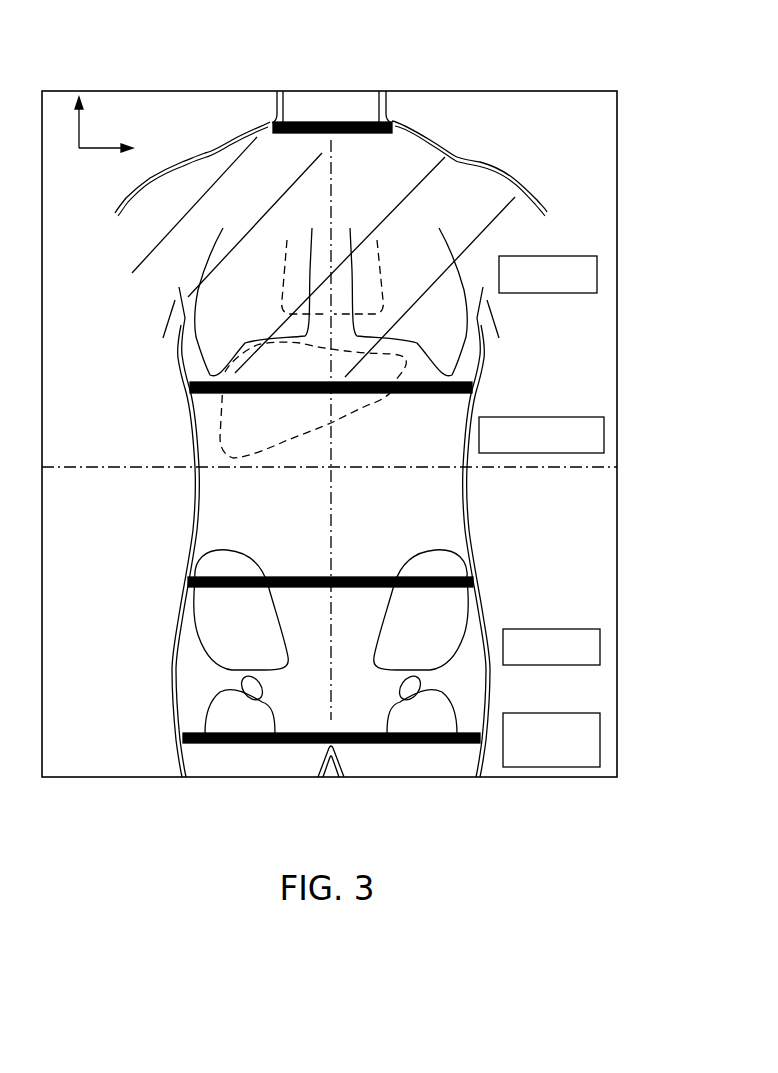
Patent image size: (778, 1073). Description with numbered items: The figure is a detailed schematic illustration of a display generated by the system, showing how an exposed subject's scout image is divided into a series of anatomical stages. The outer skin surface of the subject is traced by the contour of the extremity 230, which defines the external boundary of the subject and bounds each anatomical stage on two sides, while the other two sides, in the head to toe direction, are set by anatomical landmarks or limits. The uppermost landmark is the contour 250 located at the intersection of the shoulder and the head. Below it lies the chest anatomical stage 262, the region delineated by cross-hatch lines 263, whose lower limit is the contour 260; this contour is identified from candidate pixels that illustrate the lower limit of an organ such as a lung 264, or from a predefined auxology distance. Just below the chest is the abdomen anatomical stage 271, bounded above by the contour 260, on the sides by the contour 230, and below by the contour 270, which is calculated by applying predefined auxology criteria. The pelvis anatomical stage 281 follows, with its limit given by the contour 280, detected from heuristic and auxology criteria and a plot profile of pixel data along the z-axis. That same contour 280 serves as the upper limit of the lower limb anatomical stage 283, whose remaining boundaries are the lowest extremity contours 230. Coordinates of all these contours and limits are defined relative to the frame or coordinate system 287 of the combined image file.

The contour of the extremity of the exposed subject 230 is at (452, 136).
The contour of the first anatomical landmark 250 is at (367, 121).
The contour of the lower limit of the chest anatomical stage 260 is at (440, 393).
The chest anatomical stage 262 is at (597, 273).
The cross-hatch lines 263 is at (498, 213).
The lung 264 is at (205, 360).
The contour of the abdomen anatomical stage 270 is at (360, 577).
The abdomen anatomical stage 271 is at (604, 433).
The contour of the pelvis anatomical stage 280 is at (360, 733).
The pelvis anatomical stage 281 is at (600, 645).
The lower limb anatomical stage 283 is at (600, 740).
The coordinate system 287 is at (80, 133).